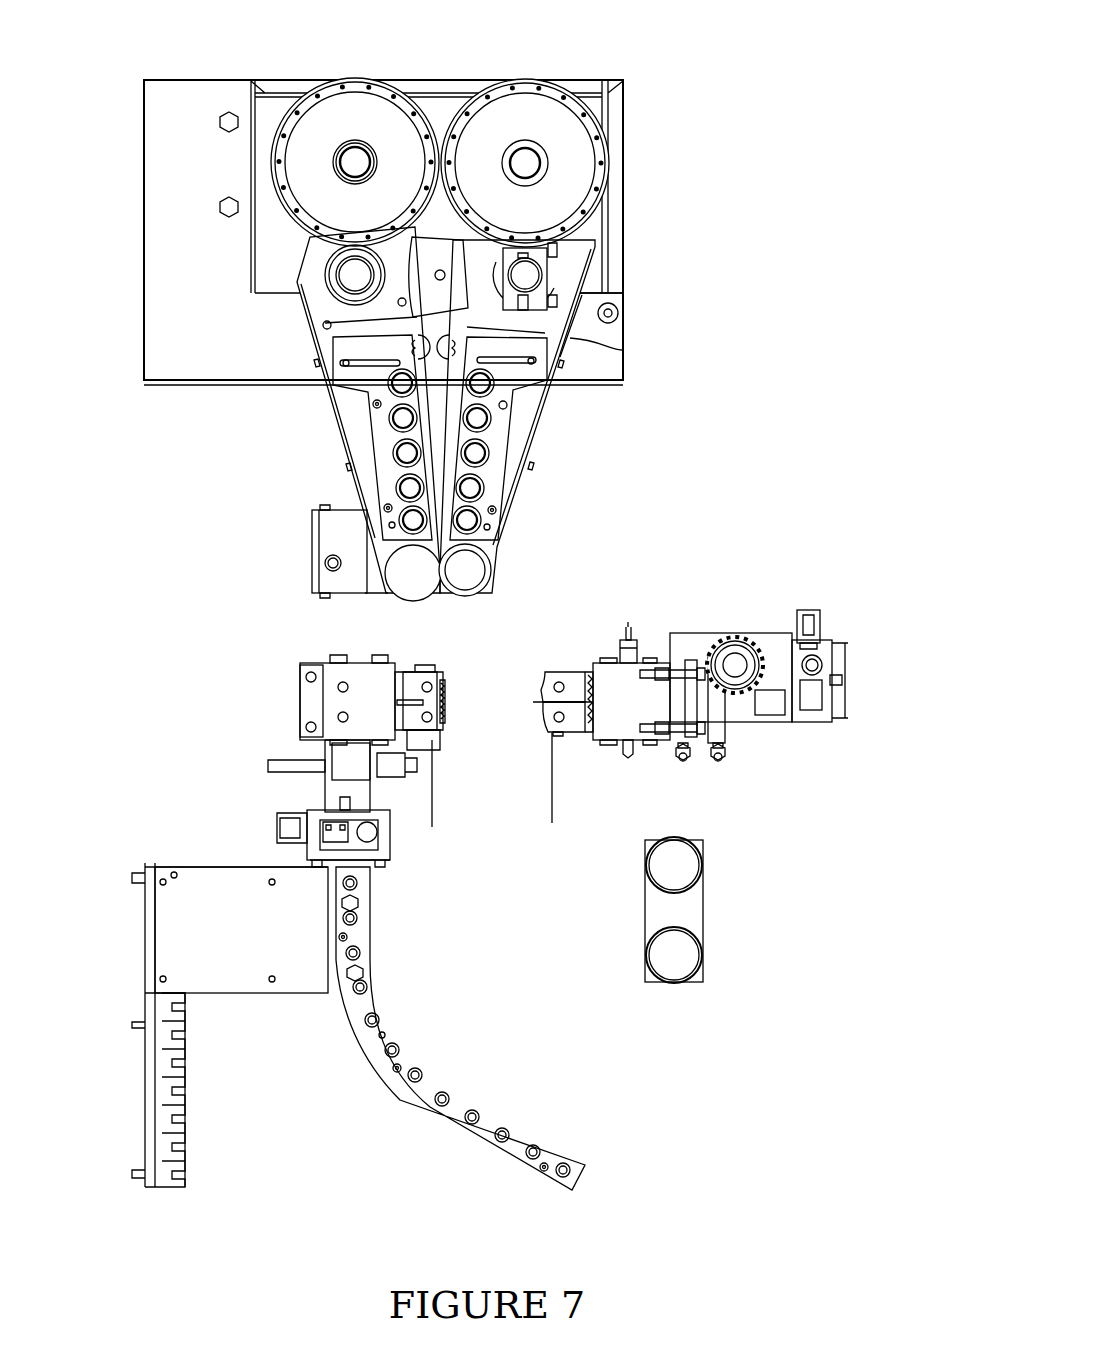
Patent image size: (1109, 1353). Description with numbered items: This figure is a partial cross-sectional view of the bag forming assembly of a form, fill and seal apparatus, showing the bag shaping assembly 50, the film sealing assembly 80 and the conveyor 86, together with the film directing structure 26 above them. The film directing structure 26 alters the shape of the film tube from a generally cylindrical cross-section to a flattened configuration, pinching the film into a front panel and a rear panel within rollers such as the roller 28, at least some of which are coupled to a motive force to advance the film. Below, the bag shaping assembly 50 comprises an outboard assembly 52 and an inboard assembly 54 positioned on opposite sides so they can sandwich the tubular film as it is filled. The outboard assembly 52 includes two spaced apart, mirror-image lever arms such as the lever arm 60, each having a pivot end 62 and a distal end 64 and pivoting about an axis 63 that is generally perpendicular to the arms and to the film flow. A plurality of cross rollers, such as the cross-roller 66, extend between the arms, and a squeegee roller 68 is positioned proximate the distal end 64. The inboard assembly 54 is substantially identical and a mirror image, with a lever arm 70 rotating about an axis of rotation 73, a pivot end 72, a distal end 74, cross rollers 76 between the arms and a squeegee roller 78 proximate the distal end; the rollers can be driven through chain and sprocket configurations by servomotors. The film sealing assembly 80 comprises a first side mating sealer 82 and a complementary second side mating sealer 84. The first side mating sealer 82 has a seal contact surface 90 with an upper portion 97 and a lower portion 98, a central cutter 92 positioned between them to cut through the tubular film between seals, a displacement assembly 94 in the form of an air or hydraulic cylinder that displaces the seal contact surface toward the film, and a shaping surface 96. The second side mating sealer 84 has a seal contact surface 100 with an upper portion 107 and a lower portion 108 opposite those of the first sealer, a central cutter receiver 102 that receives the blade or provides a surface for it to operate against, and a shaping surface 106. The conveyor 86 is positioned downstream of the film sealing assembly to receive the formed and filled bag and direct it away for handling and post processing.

The film directing structure 26 is at (351, 68).
The roller 28 is at (404, 84).
The bag shaping assembly 50 is at (660, 273).
The outboard assembly 52 is at (558, 431).
The inboard assembly 54 is at (288, 470).
The lever arm 60 is at (555, 387).
The pivot end 62 is at (538, 292).
The axis 63 is at (530, 270).
The distal end 64 is at (490, 578).
The cross-roller 66 is at (475, 455).
The squeegee roller 68 is at (570, 338).
The lever arm 70 is at (333, 407).
The pivot end 72 is at (325, 307).
The axis of rotation 73 is at (350, 275).
The distal end 74 is at (376, 556).
The cross roller 76 is at (400, 455).
The squeegee roller 78 is at (308, 352).
The film sealing assembly 80 is at (860, 612).
The first side mating sealer 82 is at (626, 600).
The second side mating sealer 84 is at (252, 712).
The conveyor 86 is at (482, 1140).
The seal contact surface 90 is at (535, 643).
The central cutter 92 is at (545, 697).
The displacement assembly 94 is at (750, 600).
The shaping surface 96 is at (552, 792).
The upper portion 97 is at (545, 682).
The lower portion 98 is at (550, 725).
The seal contact surface 100 is at (433, 690).
The central cutter receiver 102 is at (445, 704).
The shaping surface 106 is at (432, 827).
The upper portion 107 is at (400, 702).
The lower portion 108 is at (443, 718).